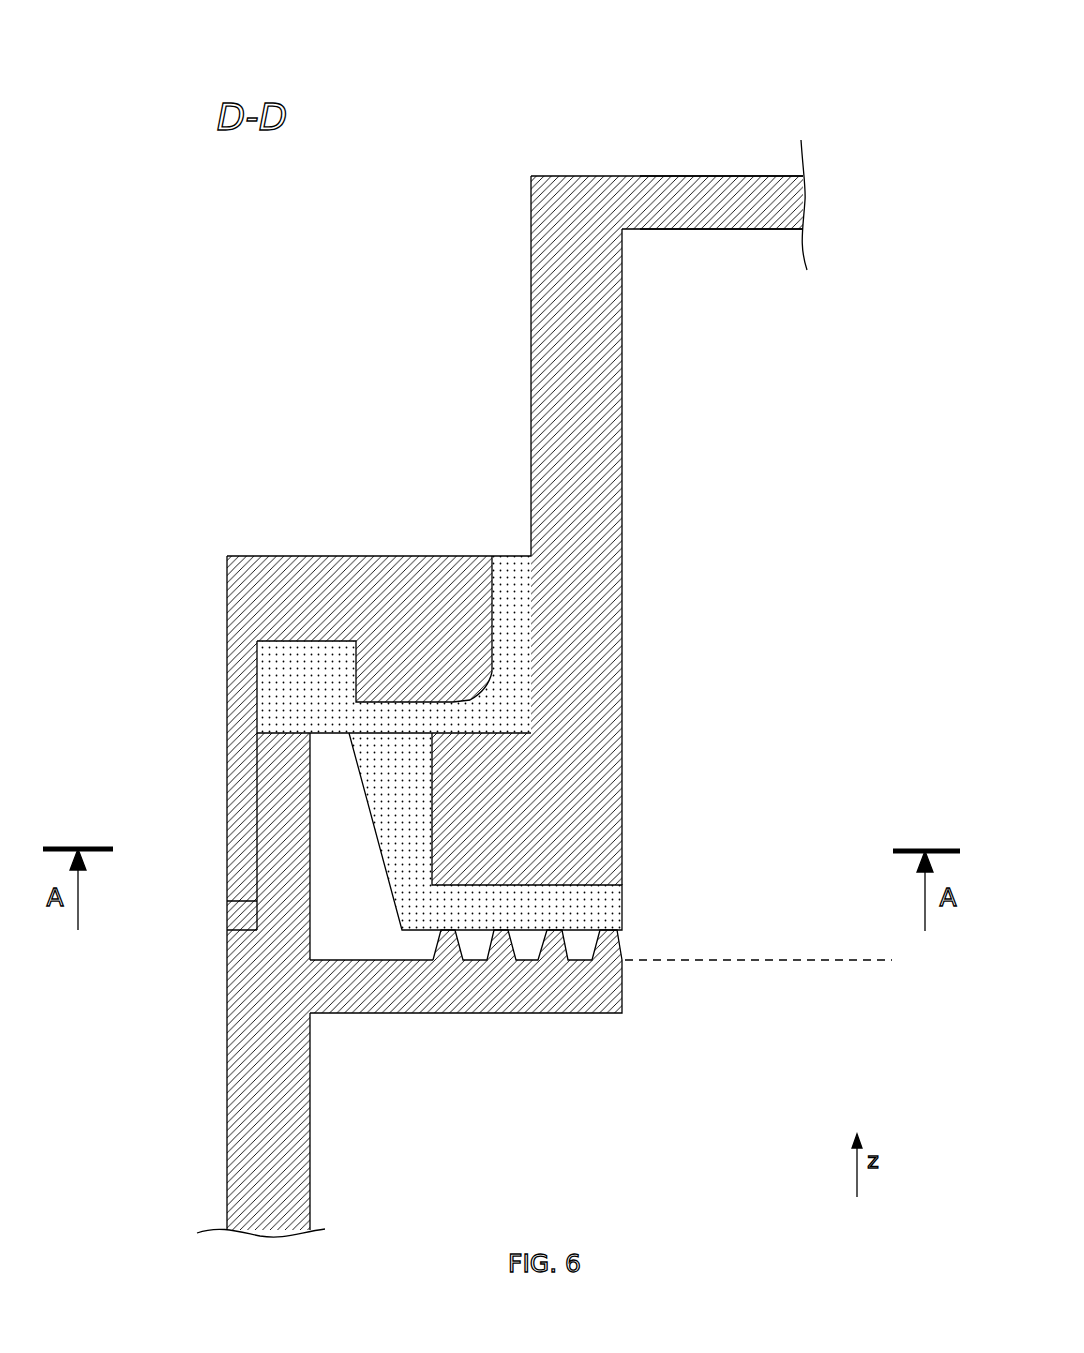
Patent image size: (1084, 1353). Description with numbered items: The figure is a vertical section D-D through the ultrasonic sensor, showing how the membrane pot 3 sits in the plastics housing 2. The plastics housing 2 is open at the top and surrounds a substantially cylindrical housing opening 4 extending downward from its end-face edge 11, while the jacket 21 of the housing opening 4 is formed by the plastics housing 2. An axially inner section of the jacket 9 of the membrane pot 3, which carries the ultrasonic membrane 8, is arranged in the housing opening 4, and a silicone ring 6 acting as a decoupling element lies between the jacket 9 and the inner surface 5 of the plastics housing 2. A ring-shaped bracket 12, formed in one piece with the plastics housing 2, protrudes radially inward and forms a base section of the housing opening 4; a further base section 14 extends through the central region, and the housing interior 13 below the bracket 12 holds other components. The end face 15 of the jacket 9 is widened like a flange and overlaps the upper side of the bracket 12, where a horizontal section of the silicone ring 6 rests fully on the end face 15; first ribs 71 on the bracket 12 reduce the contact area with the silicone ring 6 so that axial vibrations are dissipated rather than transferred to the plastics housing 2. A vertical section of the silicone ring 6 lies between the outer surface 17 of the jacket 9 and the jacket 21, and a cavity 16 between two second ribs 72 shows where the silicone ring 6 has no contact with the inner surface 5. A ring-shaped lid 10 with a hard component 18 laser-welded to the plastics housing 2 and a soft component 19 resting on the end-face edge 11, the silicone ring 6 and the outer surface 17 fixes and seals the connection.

The plastics housing 2 is at (227, 1188).
The membrane pot 3 is at (491, 97).
The housing opening 4 is at (767, 817).
The inner surface 5 is at (392, 943).
The silicone ring 6 is at (623, 911).
The ultrasonic membrane 8 is at (645, 176).
The jacket 9 is at (531, 232).
The ring-shaped lid 10 is at (433, 483).
The end-face edge 11 is at (293, 731).
The ring-shaped bracket 12 is at (623, 997).
The housing interior 13 is at (556, 1161).
The further base section 14 is at (872, 960).
The end face 15 is at (525, 898).
The cavity 16 is at (334, 874).
The outer surface 17 is at (531, 320).
The hard component 18 is at (466, 556).
The soft component 19 is at (516, 556).
The jacket 21 is at (227, 901).
The first ribs 71 is at (622, 946).
The second ribs 72 is at (372, 806).